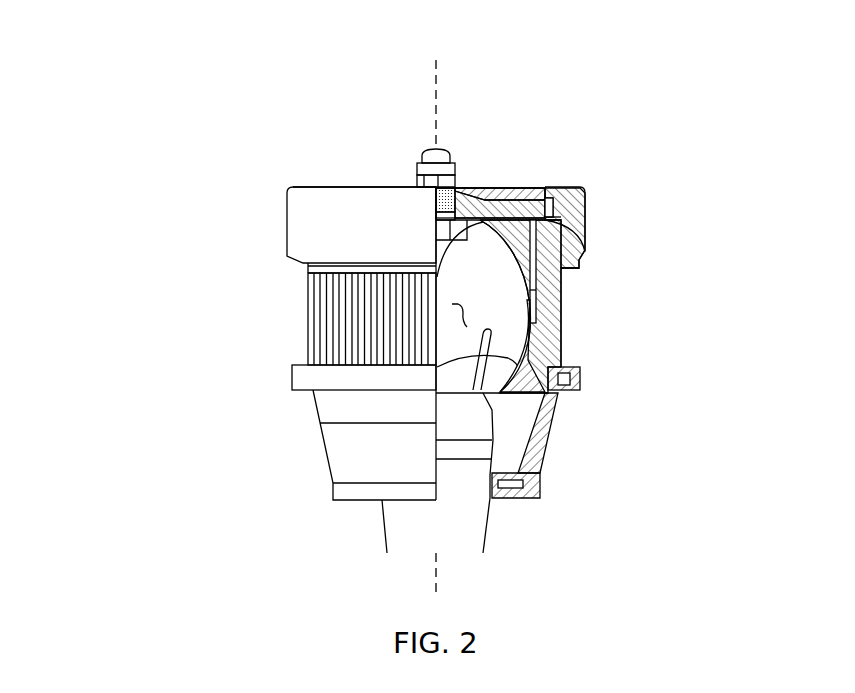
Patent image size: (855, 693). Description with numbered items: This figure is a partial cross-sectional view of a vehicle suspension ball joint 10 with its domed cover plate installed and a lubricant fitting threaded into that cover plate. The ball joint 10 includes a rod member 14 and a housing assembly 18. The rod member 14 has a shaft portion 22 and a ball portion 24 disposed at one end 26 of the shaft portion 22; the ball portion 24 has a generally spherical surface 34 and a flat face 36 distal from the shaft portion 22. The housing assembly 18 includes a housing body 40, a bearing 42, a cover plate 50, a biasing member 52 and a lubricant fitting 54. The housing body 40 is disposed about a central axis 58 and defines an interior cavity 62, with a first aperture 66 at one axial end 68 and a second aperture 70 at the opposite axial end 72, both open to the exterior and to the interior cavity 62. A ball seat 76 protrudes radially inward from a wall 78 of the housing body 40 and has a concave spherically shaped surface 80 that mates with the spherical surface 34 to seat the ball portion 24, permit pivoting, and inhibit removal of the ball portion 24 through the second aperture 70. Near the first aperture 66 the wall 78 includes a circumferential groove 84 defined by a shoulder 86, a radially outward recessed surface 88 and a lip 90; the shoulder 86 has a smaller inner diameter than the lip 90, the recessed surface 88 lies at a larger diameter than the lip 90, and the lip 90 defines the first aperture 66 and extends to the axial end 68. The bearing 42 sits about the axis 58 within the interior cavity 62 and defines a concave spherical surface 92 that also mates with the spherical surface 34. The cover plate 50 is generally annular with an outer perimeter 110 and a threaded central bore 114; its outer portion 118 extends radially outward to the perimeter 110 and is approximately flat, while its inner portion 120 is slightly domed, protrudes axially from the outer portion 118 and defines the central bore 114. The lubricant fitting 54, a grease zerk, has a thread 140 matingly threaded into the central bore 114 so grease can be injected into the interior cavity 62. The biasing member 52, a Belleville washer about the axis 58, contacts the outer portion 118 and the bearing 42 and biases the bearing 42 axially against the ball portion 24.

The ball joint 10 is at (140, 290).
The rod member 14 is at (397, 513).
The housing assembly 18 is at (276, 251).
The shaft portion 22 is at (378, 550).
The ball portion 24 is at (452, 342).
The one end 26 is at (462, 427).
The spherical surface 34 is at (452, 313).
The flat face 36 is at (433, 243).
The housing body 40 is at (553, 348).
The bearing 42 is at (527, 268).
The cover plate 50 is at (534, 186).
The biasing member 52 is at (433, 220).
The lubricant fitting 54 is at (425, 157).
The central axis 58 is at (437, 80).
The interior cavity 62 is at (550, 403).
The first aperture 66 is at (549, 187).
The axial end 68 is at (300, 187).
The second aperture 70 is at (490, 500).
The opposite axial end 72 is at (523, 499).
The ball seat 76 is at (570, 378).
The wall 78 is at (553, 311).
The concave spherically shaped surface 80 is at (440, 365).
The circumferential groove 84 is at (568, 207).
The shoulder 86 is at (584, 254).
The radially outward recessed surface 88 is at (585, 213).
The lip 90 is at (583, 189).
The concave spherical surface 92 is at (440, 277).
The outer perimeter 110 is at (584, 218).
The central bore 114 is at (477, 178).
The outer portion 118 is at (505, 205).
The inner portion 120 is at (482, 193).
The thread 140 is at (433, 190).